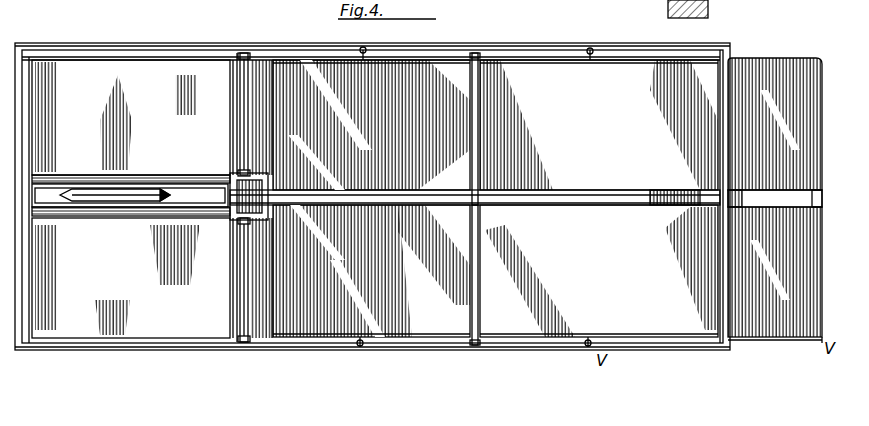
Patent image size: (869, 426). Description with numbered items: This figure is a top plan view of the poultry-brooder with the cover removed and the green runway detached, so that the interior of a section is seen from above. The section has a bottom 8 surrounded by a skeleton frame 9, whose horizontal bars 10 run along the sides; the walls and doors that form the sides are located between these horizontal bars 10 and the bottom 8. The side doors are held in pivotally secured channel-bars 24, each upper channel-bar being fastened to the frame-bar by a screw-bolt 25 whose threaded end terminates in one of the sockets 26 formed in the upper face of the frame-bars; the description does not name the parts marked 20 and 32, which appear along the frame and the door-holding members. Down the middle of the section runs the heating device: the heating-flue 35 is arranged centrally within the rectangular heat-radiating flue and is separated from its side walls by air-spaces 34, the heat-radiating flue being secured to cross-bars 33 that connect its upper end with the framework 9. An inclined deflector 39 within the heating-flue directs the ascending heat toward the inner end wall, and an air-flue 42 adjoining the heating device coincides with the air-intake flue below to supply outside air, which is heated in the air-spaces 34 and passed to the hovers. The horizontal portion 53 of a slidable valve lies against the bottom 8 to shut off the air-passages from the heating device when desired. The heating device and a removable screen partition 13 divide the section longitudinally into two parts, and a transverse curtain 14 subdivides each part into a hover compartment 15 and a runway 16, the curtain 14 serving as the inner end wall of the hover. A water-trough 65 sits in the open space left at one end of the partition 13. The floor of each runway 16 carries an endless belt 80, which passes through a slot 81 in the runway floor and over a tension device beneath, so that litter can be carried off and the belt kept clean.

The bottom 8 is at (129, 200).
The skeleton frame 9 is at (509, 57).
The horizontal bars 10 is at (617, 50).
The removable screen partition 13 is at (418, 198).
The transverse curtain 14 is at (245, 110).
The hover compartment 15 is at (155, 128).
The runway 16 is at (430, 140).
The vertical post 20 is at (479, 121).
The channel-bars 24 is at (317, 46).
The screw-bolt 25 is at (366, 58).
The sockets 26 is at (360, 53).
The panel retaining strip 32 is at (426, 62).
The cross-bars 33 is at (238, 78).
The air-spaces 34 is at (90, 182).
The heating-flue 35 is at (63, 200).
The inclined deflector 39 is at (126, 200).
The air-flue 42 is at (262, 212).
The horizontal portion of valve 53 is at (183, 215).
The water-trough 65 is at (680, 195).
The endless belt 80 is at (651, 200).
The slot 81 is at (278, 119).